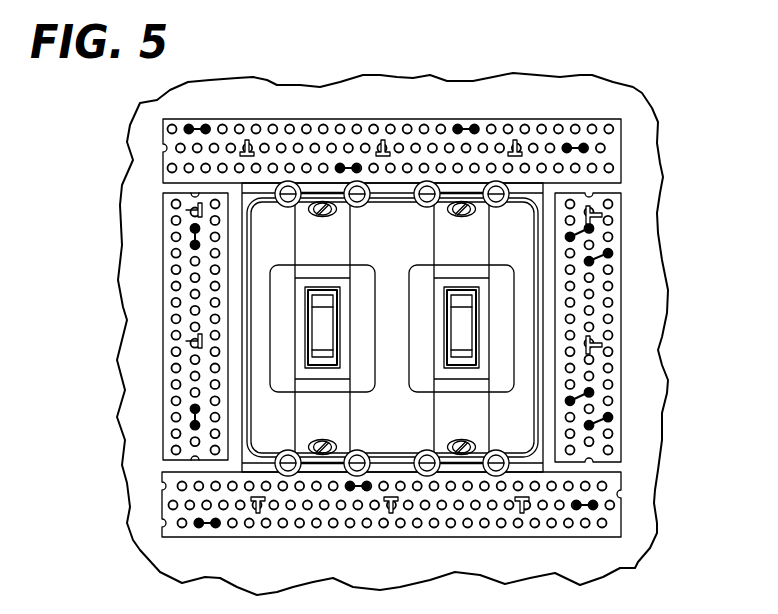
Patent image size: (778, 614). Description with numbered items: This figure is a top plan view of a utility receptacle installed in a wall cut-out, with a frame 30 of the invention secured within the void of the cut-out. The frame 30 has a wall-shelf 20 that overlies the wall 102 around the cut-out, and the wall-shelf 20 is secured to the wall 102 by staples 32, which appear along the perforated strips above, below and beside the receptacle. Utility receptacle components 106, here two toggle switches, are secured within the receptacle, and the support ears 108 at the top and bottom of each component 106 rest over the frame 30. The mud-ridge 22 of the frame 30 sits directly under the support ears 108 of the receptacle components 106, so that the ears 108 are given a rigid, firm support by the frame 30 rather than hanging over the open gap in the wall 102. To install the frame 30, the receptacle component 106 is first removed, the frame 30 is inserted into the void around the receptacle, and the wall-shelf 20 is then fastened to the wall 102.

The wall-shelf 20 is at (612, 368).
The mud-ridge 22 is at (392, 187).
The frame 30 is at (615, 143).
The staples 32 is at (593, 505).
The wall 102 is at (143, 302).
The utility receptacle components 106 is at (458, 263).
The support ears 108 is at (494, 181).